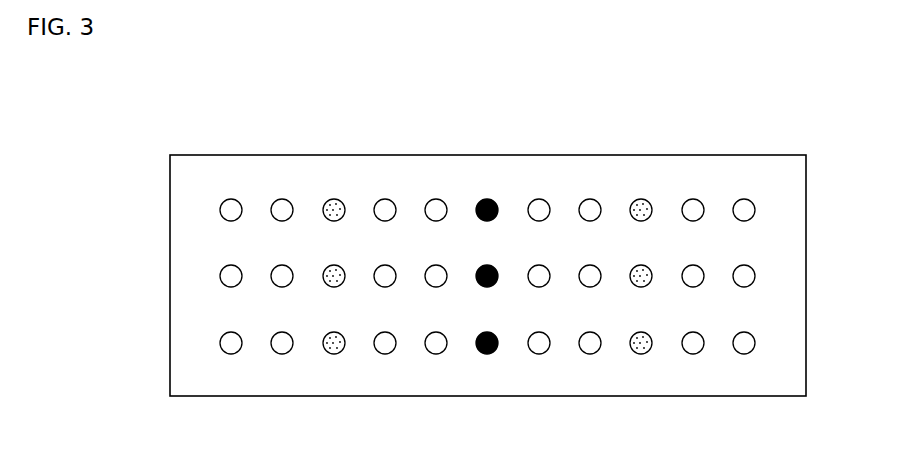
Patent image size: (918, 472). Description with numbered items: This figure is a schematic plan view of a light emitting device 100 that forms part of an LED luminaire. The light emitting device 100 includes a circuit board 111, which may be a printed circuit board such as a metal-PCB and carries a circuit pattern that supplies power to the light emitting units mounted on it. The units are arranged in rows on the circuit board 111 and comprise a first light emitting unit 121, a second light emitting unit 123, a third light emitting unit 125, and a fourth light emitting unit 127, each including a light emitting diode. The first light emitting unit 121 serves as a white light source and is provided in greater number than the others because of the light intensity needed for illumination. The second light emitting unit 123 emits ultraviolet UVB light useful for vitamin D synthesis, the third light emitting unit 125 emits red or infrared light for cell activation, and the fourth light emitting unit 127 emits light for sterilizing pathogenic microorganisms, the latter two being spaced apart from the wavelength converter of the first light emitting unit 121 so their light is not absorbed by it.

The light emitting device 100 is at (853, 90).
The circuit board 111 is at (791, 232).
The first light emitting unit 121 is at (232, 354).
The second light emitting unit 123 is at (334, 354).
The third light emitting unit 125 is at (487, 354).
The fourth light emitting unit 127 is at (641, 354).